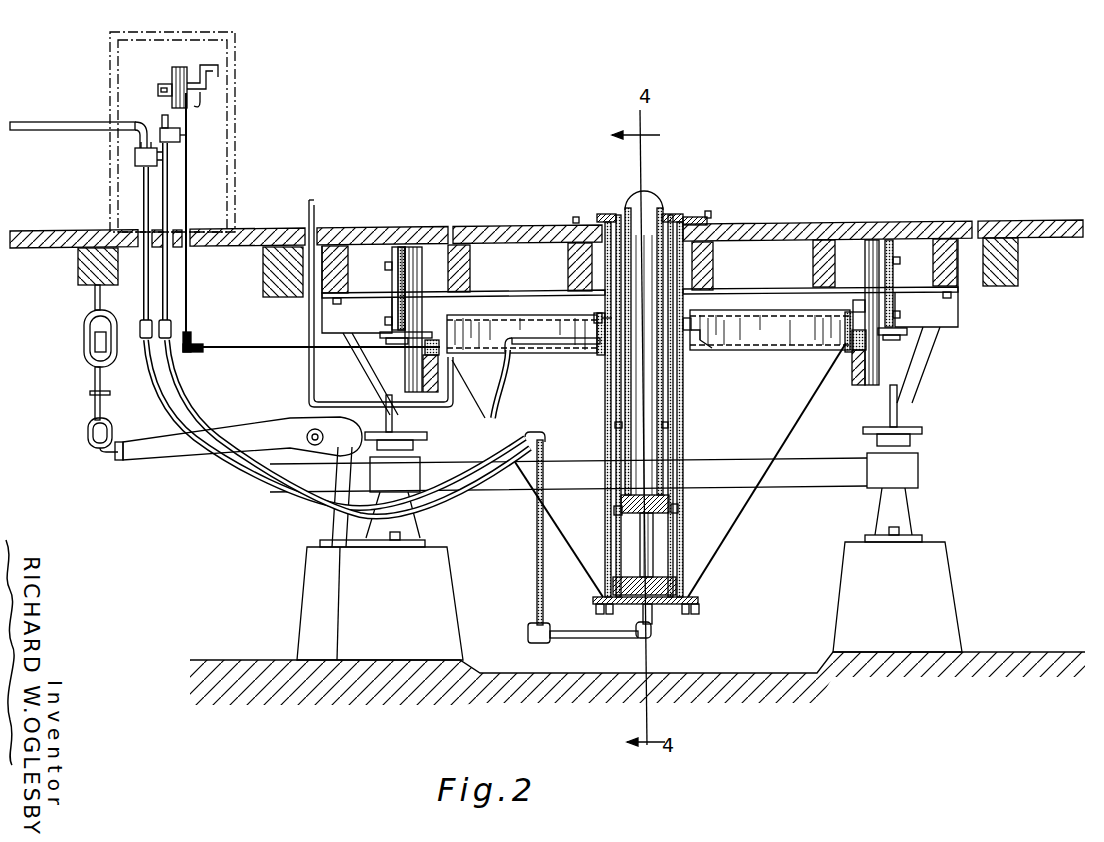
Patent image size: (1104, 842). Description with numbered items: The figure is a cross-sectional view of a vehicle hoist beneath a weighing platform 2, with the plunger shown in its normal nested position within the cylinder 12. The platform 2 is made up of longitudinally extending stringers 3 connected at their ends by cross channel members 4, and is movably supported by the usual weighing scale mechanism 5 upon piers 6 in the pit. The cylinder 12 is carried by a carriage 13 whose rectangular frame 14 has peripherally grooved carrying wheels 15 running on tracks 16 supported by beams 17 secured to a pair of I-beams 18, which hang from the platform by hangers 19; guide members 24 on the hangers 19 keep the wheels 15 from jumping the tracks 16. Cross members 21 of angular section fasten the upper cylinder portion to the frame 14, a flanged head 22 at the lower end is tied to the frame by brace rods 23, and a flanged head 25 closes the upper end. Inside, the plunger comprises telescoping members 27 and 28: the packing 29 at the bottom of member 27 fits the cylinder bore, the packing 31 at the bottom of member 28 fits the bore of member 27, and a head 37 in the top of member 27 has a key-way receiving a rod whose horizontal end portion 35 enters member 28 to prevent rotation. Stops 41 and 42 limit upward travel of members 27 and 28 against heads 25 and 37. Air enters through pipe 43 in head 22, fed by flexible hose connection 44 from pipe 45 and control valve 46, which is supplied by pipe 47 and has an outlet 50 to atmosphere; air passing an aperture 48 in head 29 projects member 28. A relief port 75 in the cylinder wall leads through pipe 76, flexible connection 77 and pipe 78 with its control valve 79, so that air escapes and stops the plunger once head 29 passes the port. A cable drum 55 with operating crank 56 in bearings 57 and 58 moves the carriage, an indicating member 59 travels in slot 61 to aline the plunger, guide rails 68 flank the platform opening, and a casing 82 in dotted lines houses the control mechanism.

The weighing platform 2 is at (492, 228).
The stringers 3 is at (338, 262).
The cross channel members 4 is at (955, 315).
The weighing scale mechanism 5 is at (275, 420).
The piers 6 is at (360, 600).
The cylinder 12 is at (685, 406).
The carriage 13 is at (766, 355).
The rectangular frame 14 is at (770, 330).
The carrying wheels 15 is at (430, 340).
The tracks 16 is at (432, 348).
The beams 17 is at (437, 386).
The I-beams 18 is at (392, 306).
The hangers 19 is at (413, 368).
The cross members 21 is at (594, 318).
The flanged head 22 is at (698, 600).
The brace rods 23 is at (555, 522).
The guide members 24 is at (425, 308).
The flanged head 25 is at (697, 217).
The telescoping member 27 is at (616, 438).
The telescoping member 28 is at (674, 438).
The packing 29 is at (686, 586).
The packing 31 is at (672, 496).
The horizontal end portion 35 is at (641, 208).
The head 37 is at (676, 214).
The stops 41 is at (614, 511).
The stops 42 is at (615, 425).
The pipe 43 is at (573, 640).
The flexible hose connection 44 is at (430, 505).
The pipe 45 is at (143, 205).
The control valve 46 is at (135, 159).
The pipe 47 is at (47, 124).
The aperture 48 is at (648, 576).
The outlet 50 is at (135, 155).
The drum 55 is at (177, 67).
The operating crank 56 is at (214, 77).
The bearing 57 is at (159, 92).
The bearing 58 is at (204, 107).
The indicating member 59 is at (311, 200).
The slot 61 is at (313, 232).
The guide rails 68 is at (576, 217).
The relief port 75 is at (600, 354).
The pipe 76 is at (549, 346).
The flexible connection 77 is at (255, 480).
The pipe 78 is at (168, 193).
The control valve 79 is at (188, 140).
The casing 82 is at (237, 43).